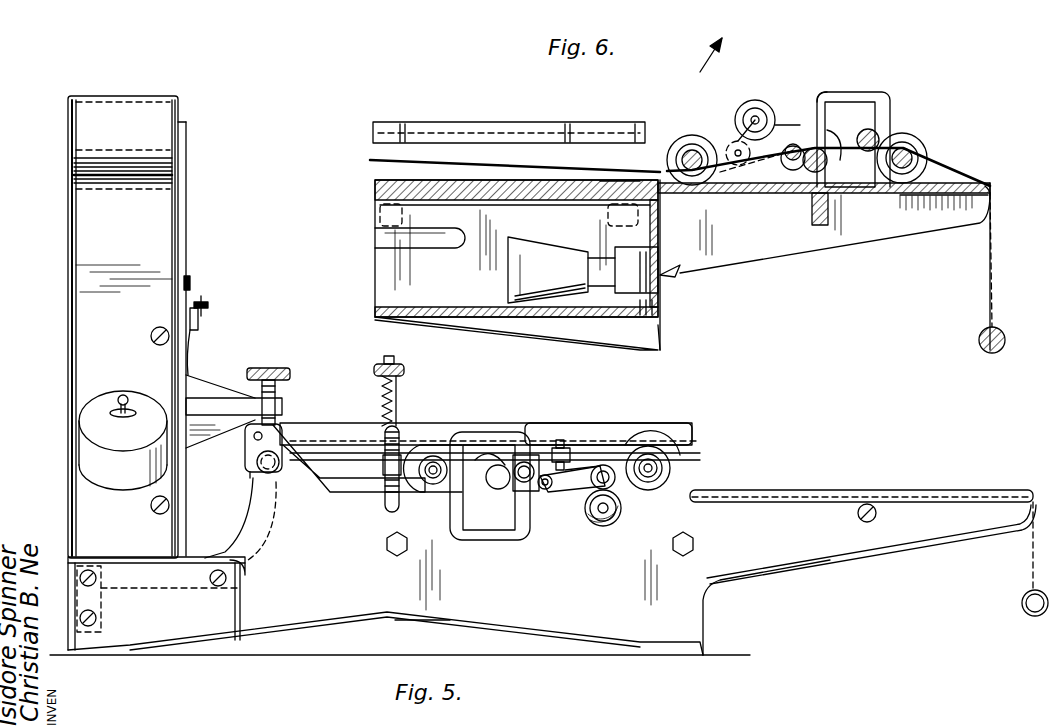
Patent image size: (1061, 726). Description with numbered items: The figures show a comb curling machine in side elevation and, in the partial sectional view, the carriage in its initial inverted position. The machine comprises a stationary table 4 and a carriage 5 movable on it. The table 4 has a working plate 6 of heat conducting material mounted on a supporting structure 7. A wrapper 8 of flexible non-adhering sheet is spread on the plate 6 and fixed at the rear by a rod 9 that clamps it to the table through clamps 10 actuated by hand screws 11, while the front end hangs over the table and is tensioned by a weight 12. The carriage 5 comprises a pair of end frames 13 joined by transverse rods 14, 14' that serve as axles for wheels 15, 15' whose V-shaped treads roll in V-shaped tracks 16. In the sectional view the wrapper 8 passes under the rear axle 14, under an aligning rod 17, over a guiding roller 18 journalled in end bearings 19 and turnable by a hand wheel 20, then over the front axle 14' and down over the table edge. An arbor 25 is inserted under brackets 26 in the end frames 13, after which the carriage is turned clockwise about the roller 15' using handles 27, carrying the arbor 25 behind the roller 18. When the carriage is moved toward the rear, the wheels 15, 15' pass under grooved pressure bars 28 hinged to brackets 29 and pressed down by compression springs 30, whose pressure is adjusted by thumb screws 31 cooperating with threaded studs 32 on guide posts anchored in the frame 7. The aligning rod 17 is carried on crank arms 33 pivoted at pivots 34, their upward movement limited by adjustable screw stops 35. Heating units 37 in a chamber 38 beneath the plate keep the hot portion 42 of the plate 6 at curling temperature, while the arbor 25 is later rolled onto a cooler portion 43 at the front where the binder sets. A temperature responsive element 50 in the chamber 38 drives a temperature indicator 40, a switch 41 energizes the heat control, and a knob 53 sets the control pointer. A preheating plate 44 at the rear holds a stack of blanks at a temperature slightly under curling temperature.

In FIG. 5, the stationary table 4 is at (826, 565).
In FIG. 6, the stationary table 4 is at (792, 248).
In FIG. 5, the carriage 5 is at (684, 462).
In FIG. 6, the carriage 5 is at (892, 94).
In FIG. 6, the working plate 6 is at (612, 182).
In FIG. 5, the supporting structure 7 is at (385, 600).
In FIG. 6, the supporting structure 7 is at (662, 335).
In FIG. 5, the wrapper 8 is at (320, 455).
In FIG. 6, the wrapper 8 is at (372, 160).
In FIG. 5, the rod 9 is at (248, 472).
In FIG. 5, the clamps 10 is at (258, 457).
In FIG. 5, the hand screws 11 is at (258, 366).
In FIG. 5, the weight 12 is at (1028, 605).
In FIG. 6, the weight 12 is at (980, 338).
In FIG. 5, the end frames 13 is at (598, 465).
In FIG. 6, the end frames 13 is at (800, 124).
In FIG. 5, the rear axle 14 is at (653, 494).
In FIG. 6, the rear axle 14 is at (685, 124).
In FIG. 5, the front axle 14' is at (437, 439).
In FIG. 6, the front axle 14' is at (931, 146).
In FIG. 5, the wheel 15 is at (678, 468).
In FIG. 6, the wheel 15 is at (682, 143).
In FIG. 5, the front roller 15' is at (408, 468).
In FIG. 6, the front roller 15' is at (909, 142).
In FIG. 5, the V-shaped tracks 16 is at (918, 490).
In FIG. 6, the V-shaped tracks 16 is at (965, 186).
In FIG. 5, the aligning rod 17 is at (546, 492).
In FIG. 6, the aligning rod 17 is at (790, 142).
In FIG. 5, the guiding roller 18 is at (526, 458).
In FIG. 6, the guiding roller 18 is at (812, 172).
In FIG. 5, the end bearings 19 is at (520, 460).
In FIG. 6, the hand wheel 20 is at (868, 128).
In FIG. 5, the arbor 25 is at (494, 488).
In FIG. 6, the arbor 25 is at (868, 112).
In FIG. 5, the brackets 26 is at (500, 530).
In FIG. 6, the brackets 26 is at (888, 112).
In FIG. 5, the handles 27 is at (615, 522).
In FIG. 6, the handles 27 is at (752, 100).
In FIG. 5, the pressure bars 28 is at (680, 428).
In FIG. 6, the pressure bars 28 is at (528, 124).
In FIG. 5, the brackets 29 is at (262, 432).
In FIG. 5, the compression springs 30 is at (380, 395).
In FIG. 5, the thumb screws 31 is at (378, 364).
In FIG. 5, the threaded studs 32 is at (383, 480).
In FIG. 5, the crank arms 33 is at (572, 494).
In FIG. 5, the pivots 34 is at (608, 466).
In FIG. 6, the pivots 34 is at (736, 146).
In FIG. 5, the adjustable screw stops 35 is at (562, 440).
In FIG. 6, the heating units 37 is at (540, 288).
In FIG. 6, the chamber 38 is at (385, 276).
In FIG. 5, the temperature indicator 40 is at (86, 217).
In FIG. 5, the switch 41 is at (98, 430).
In FIG. 6, the hot portion 42 is at (525, 205).
In FIG. 6, the cooler portion 43 is at (860, 192).
In FIG. 5, the preheating plate 44 is at (322, 470).
In FIG. 6, the temperature responsive element 50 is at (390, 237).
In FIG. 5, the knob 53 is at (192, 283).